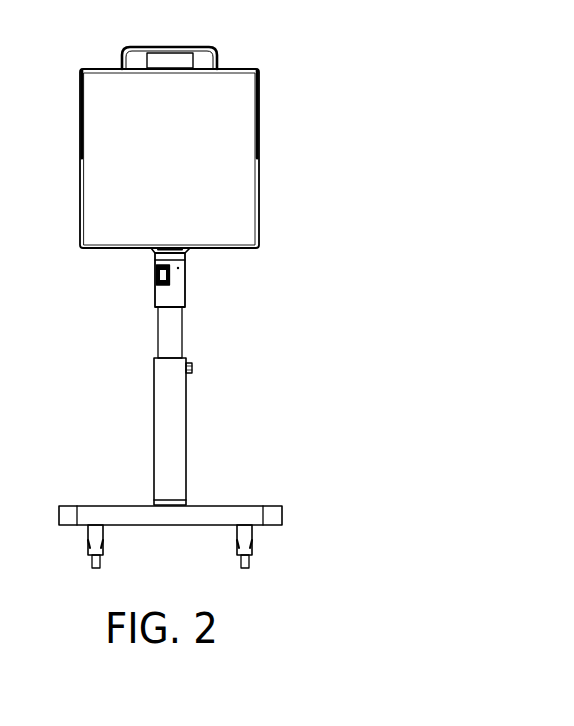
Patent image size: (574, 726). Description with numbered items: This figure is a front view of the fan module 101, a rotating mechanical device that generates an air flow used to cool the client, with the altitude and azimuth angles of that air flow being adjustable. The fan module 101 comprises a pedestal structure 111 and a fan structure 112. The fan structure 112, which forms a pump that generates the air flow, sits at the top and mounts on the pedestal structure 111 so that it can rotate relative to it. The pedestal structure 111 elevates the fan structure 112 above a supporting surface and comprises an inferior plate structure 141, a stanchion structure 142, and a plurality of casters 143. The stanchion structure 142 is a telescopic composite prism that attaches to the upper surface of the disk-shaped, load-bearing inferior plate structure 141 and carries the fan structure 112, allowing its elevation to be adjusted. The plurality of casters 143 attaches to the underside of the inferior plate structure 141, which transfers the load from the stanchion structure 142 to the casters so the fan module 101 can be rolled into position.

The fan module 101 is at (333, 100).
The fan structure 112 is at (260, 200).
The pedestal structure 111 is at (302, 327).
The stanchion structure 142 is at (186, 402).
The inferior plate structure 141 is at (282, 512).
The plurality of casters 143 is at (237, 556).